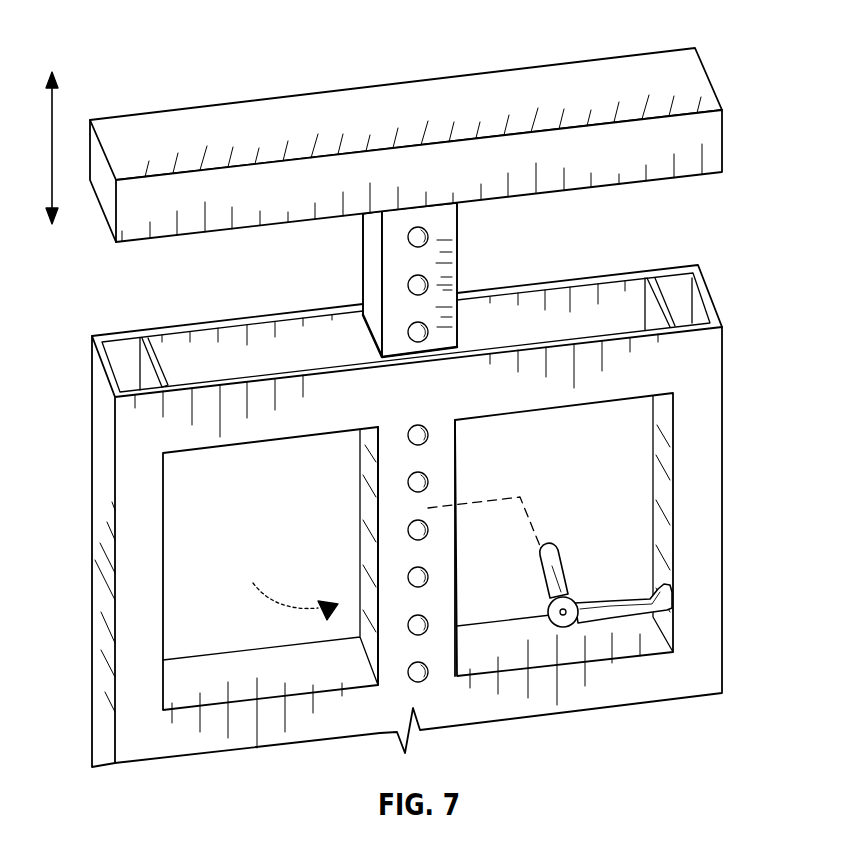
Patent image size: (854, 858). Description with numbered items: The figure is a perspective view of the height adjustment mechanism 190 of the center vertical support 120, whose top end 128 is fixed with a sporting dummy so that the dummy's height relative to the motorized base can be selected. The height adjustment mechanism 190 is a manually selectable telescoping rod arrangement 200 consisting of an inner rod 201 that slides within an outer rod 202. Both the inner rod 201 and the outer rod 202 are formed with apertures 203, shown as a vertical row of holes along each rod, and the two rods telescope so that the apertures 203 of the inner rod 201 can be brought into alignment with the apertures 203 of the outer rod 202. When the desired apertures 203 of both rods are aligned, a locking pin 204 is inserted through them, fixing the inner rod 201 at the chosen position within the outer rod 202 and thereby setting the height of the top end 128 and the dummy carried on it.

The center vertical support 120 is at (108, 418).
The top end 128 is at (447, 95).
The height adjustment mechanism 190 is at (269, 597).
The telescoping rod arrangement 200 is at (406, 189).
The inner rod 201 is at (377, 272).
The outer rod 202 is at (368, 518).
The apertures 203 is at (430, 281).
The locking pin 204 is at (557, 556).